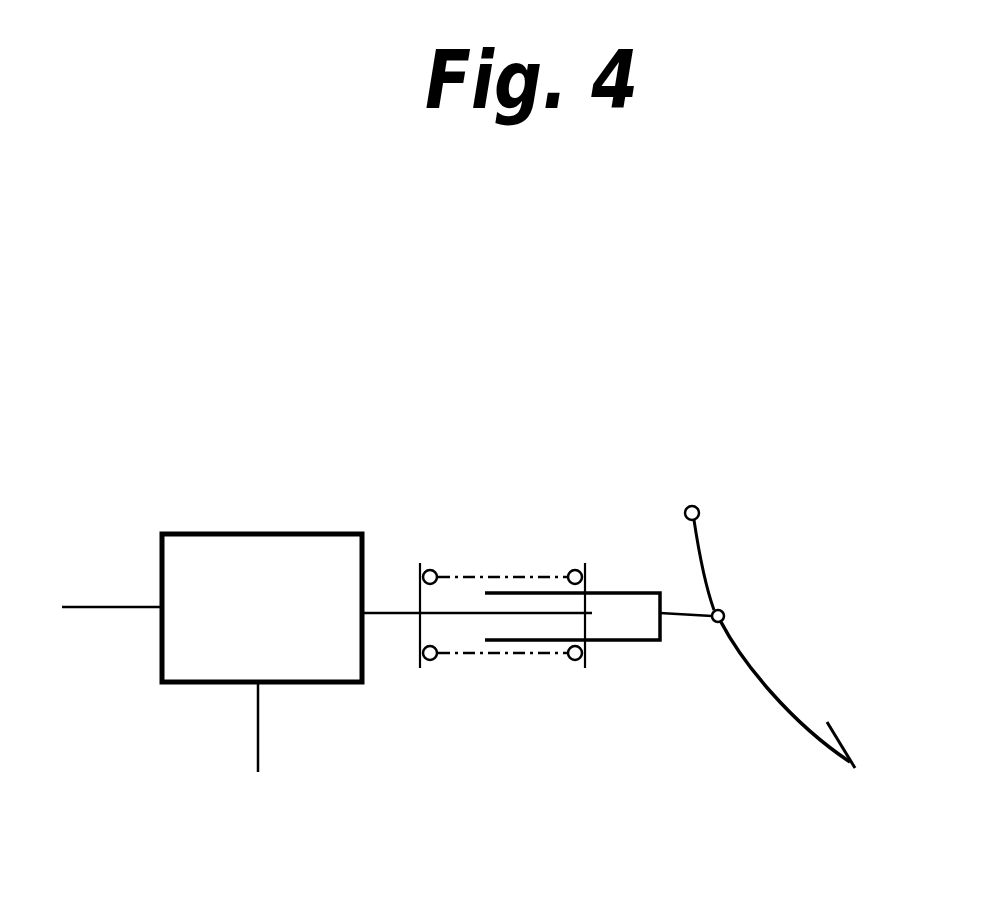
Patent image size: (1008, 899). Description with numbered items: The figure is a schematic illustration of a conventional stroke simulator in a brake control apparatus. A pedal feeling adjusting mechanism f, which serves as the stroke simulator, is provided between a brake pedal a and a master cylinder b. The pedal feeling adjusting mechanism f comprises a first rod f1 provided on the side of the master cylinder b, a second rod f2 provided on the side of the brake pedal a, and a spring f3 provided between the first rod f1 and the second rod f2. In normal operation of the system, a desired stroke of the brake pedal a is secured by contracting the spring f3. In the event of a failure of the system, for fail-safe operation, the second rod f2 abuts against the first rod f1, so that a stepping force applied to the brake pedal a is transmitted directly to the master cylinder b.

The master cylinder b is at (252, 533).
The pedal feeling adjusting mechanism f is at (487, 566).
The first rod f1 is at (395, 614).
The second rod f2 is at (647, 641).
The spring f3 is at (518, 656).
The brake pedal a is at (767, 692).